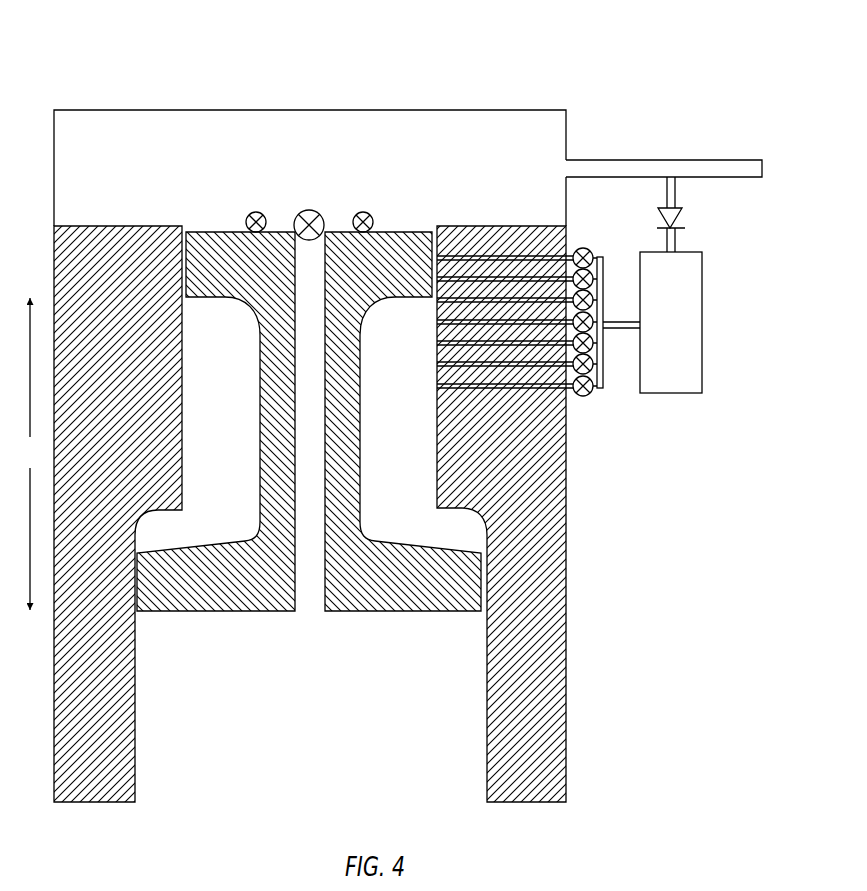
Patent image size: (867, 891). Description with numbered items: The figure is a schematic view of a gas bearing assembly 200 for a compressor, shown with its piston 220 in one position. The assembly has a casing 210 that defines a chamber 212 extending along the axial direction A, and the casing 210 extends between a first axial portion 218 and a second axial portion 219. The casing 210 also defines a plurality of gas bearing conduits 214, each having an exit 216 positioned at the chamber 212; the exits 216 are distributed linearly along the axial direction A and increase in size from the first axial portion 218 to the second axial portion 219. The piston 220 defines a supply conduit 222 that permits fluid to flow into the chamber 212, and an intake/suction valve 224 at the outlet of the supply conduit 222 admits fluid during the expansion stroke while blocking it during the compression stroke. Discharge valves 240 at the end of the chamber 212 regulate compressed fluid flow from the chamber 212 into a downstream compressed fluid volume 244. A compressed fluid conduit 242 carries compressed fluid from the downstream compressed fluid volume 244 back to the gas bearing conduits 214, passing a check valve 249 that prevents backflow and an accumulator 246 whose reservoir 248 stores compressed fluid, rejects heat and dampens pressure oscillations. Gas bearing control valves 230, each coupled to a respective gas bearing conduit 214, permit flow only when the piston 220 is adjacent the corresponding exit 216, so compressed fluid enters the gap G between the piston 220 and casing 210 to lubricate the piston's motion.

The gas bearing assembly 200 is at (72, 95).
The downstream compressed fluid volume 244 is at (318, 132).
The compressed fluid conduit 242 is at (642, 158).
The casing 210 is at (335, 494).
The second axial portion 219 is at (570, 450).
The first axial portion 218 is at (575, 228).
The exit 216 is at (436, 392).
The piston 220 is at (220, 598).
The supply conduit 222 is at (310, 603).
The chamber 212 is at (392, 227).
The gap G is at (437, 231).
The gas bearing conduits 214 is at (473, 378).
The gas bearing control valves 230 is at (594, 268).
The accumulator 246 is at (703, 315).
The reservoir 248 is at (676, 350).
The check valve 249 is at (685, 220).
The discharge valve 240 is at (252, 212).
The intake/suction valve 224 is at (302, 212).
The axial direction A is at (30, 454).